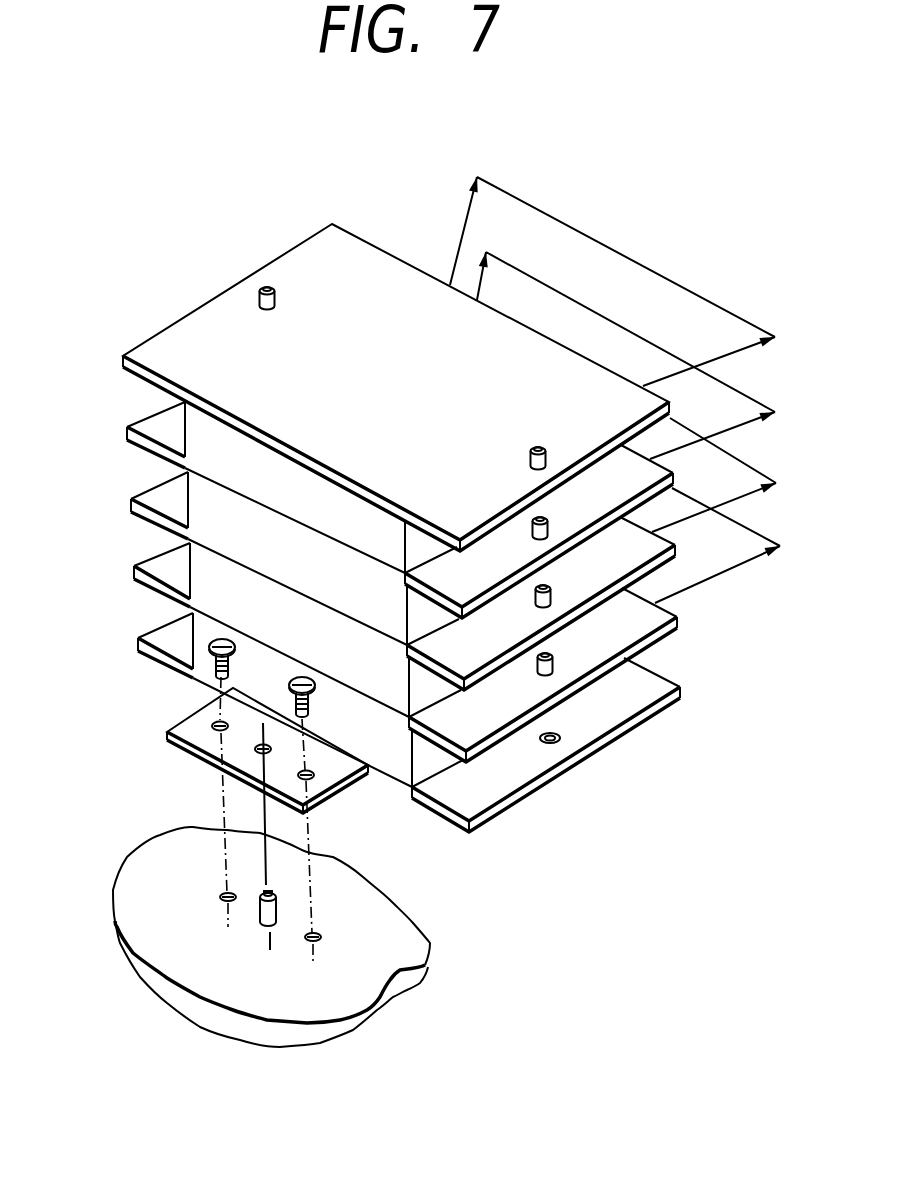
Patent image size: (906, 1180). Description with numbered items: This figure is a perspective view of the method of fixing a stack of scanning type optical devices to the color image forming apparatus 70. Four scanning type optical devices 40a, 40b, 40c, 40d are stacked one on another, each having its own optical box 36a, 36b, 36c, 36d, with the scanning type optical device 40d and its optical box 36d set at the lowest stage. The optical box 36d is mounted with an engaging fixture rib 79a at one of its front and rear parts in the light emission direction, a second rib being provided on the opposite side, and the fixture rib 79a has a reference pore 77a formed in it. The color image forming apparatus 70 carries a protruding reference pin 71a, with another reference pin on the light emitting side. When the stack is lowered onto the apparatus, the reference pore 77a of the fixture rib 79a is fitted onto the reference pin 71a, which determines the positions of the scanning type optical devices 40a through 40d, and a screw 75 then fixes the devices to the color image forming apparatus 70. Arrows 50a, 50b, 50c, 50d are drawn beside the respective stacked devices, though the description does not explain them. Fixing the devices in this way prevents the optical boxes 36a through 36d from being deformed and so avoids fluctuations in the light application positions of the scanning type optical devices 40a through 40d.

The optical box 36a is at (403, 572).
The optical box 36b is at (404, 646).
The optical box 36c is at (407, 717).
The optical box 36d is at (402, 783).
The scanning type optical device 40a is at (187, 435).
The scanning type optical device 40b is at (190, 508).
The scanning type optical device 40c is at (192, 580).
The scanning type optical device 40d is at (195, 647).
The insertion direction of first card 50a is at (740, 347).
The insertion direction of second card 50b is at (745, 417).
The insertion direction of third card 50c is at (747, 488).
The insertion direction of fourth card 50d is at (750, 550).
The color image forming apparatus 70 is at (420, 943).
The reference pin 71a is at (260, 917).
The screw 75 is at (223, 642).
The reference pore 77a is at (257, 752).
The engaging fixture rib 79a is at (165, 727).